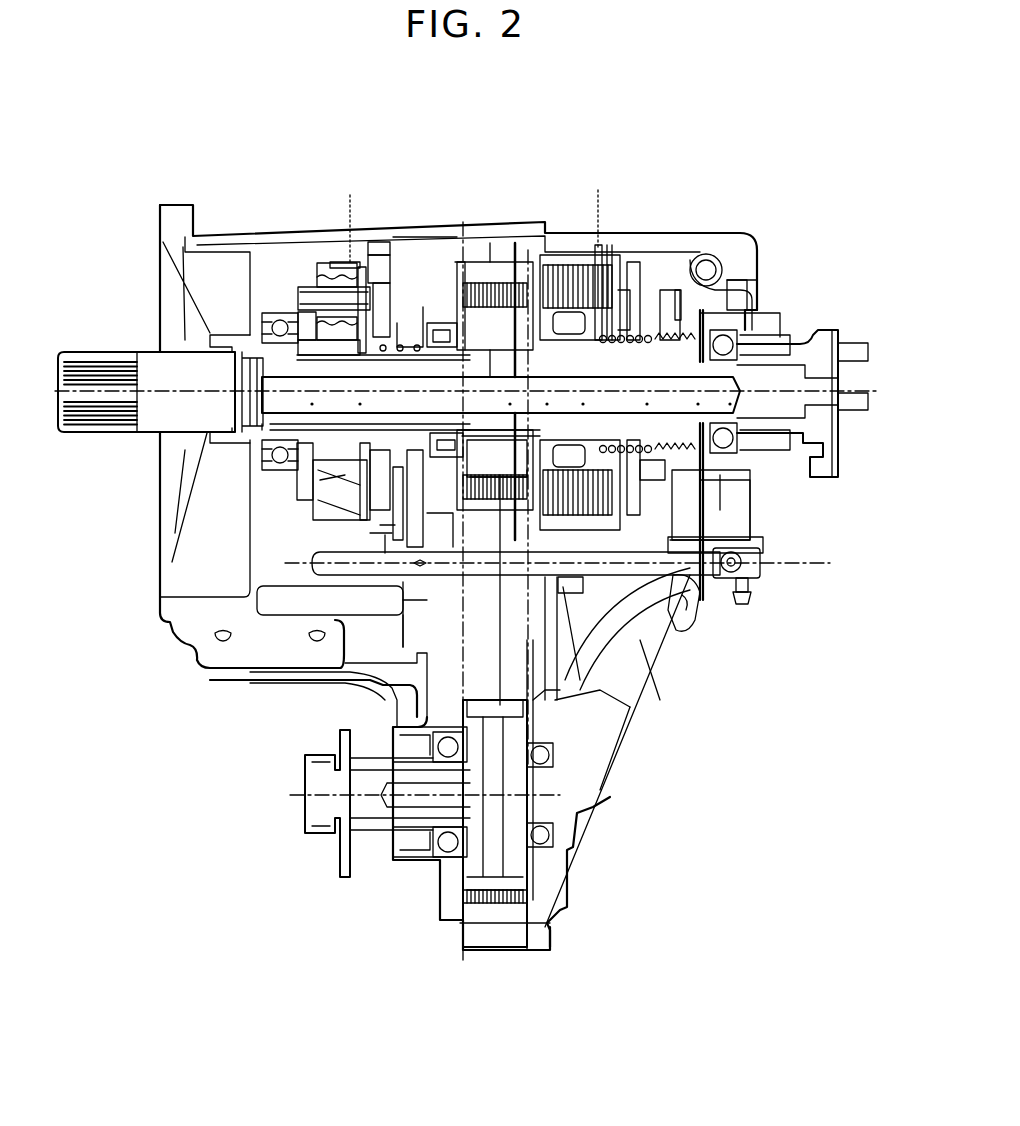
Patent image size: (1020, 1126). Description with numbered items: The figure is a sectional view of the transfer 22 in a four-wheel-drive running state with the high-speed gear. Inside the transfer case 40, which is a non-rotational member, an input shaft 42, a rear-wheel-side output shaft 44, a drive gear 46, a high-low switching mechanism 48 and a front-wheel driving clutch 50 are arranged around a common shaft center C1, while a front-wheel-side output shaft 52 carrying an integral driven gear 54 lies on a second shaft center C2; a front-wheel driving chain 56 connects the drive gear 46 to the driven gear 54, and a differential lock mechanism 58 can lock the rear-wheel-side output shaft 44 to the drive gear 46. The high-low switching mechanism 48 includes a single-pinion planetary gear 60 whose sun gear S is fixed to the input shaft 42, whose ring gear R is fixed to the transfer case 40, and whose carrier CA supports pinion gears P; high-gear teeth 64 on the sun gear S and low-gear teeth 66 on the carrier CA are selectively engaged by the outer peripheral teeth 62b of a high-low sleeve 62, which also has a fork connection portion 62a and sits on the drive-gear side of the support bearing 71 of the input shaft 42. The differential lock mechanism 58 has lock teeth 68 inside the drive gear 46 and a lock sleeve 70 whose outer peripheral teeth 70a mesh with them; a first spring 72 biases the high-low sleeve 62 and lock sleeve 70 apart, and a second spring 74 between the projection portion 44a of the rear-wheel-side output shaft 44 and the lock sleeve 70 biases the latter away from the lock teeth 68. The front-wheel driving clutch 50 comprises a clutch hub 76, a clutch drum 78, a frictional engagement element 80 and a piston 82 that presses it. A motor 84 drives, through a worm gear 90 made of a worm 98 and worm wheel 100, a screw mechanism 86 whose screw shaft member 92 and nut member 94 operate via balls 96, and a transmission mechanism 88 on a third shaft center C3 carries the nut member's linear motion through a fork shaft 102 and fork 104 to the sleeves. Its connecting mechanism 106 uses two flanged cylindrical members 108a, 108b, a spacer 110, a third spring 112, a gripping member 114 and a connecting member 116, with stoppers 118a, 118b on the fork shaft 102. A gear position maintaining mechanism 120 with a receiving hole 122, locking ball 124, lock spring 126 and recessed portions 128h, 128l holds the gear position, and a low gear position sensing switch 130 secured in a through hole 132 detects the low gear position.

The transfer 22 is at (686, 142).
The transfer case 40 is at (276, 256).
The input shaft 42 is at (148, 355).
The rear-wheel-side output shaft 44 is at (818, 396).
The projection portion 44a is at (487, 360).
The drive gear 46 is at (514, 300).
The high-low switching mechanism 48 is at (396, 246).
The front-wheel driving clutch 50 is at (572, 253).
The front-wheel-side output shaft 52 is at (312, 788).
The driven gear 54 is at (420, 726).
The front-wheel driving chain 56 is at (445, 818).
The differential lock mechanism 58 is at (476, 330).
The planetary gear 60 is at (340, 249).
The high-low sleeve 62 is at (389, 310).
The fork connection portion 62a is at (390, 280).
The outer peripheral teeth 62b is at (321, 215).
The high-gear teeth 64 is at (318, 290).
The low-gear teeth 66 is at (345, 262).
The lock teeth 68 is at (488, 262).
The lock sleeve 70 is at (421, 325).
The outer peripheral teeth 70a is at (456, 288).
The support bearing 71 is at (262, 330).
The first spring 72 is at (423, 495).
The second spring 74 is at (420, 455).
The clutch hub 76 is at (572, 389).
The clutch drum 78 is at (598, 251).
The frictional engagement element 80 is at (636, 275).
The piston 82 is at (625, 292).
The motor 84 is at (696, 260).
The screw mechanism 86 is at (669, 288).
The transmission mechanism 88 is at (655, 615).
The worm gear 90 is at (735, 270).
The screw shaft member 92 is at (649, 380).
The nut member 94 is at (673, 301).
The balls 96 is at (609, 245).
The worm 98 is at (757, 280).
The worm wheel 100 is at (745, 328).
The fork shaft 102 is at (408, 595).
The fork 104 is at (370, 535).
The connecting mechanism 106 is at (652, 501).
The flanged cylindrical member 108a is at (597, 680).
The flanged cylindrical member 108b is at (622, 595).
The spacer 110 is at (523, 560).
The third spring 112 is at (582, 580).
The gripping member 114 is at (535, 435).
The connecting member 116 is at (686, 496).
The stopper 118a is at (548, 690).
The stopper 118b is at (700, 540).
The gear position maintaining mechanism 120 is at (683, 616).
The receiving hole 122 is at (682, 600).
The locking ball 124 is at (643, 640).
The lock spring 126 is at (670, 625).
The recessed portion 128h is at (745, 555).
The recessed portion 128l is at (638, 712).
The low gear position sensing switch 130 is at (745, 605).
The through hole 132 is at (744, 589).
The shaft center C1 is at (866, 400).
The shaft center C2 is at (305, 795).
The shaft center C3 is at (772, 565).
The sun gear S is at (300, 312).
The pinion gears P is at (315, 300).
The ring gear R is at (328, 282).
The carrier CA is at (368, 242).